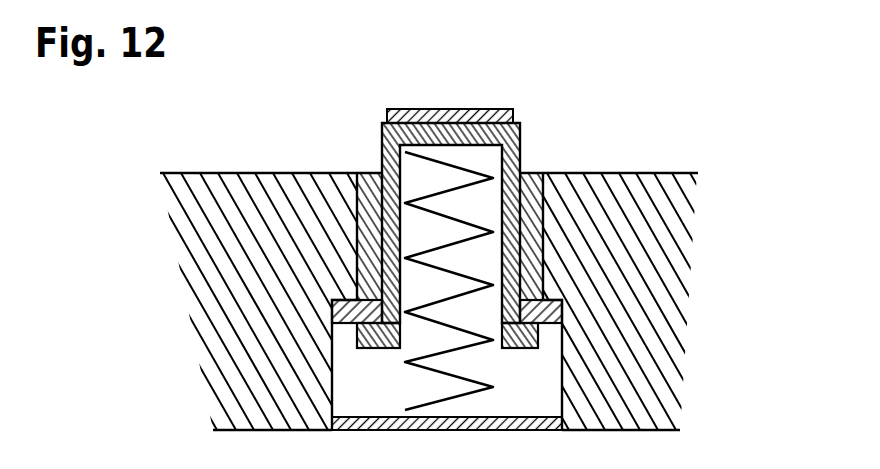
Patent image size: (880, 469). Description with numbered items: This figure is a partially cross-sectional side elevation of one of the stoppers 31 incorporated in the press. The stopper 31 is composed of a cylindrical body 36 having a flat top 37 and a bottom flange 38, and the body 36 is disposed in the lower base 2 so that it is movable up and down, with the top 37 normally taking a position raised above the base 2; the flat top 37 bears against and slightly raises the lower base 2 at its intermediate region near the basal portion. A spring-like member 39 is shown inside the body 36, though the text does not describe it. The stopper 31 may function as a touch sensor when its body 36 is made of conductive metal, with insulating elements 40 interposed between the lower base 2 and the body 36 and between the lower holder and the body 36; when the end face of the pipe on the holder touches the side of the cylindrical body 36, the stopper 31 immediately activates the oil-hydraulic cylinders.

The lower base 2 is at (213, 180).
The stopper 31 is at (378, 148).
The cylindrical body 36 is at (545, 271).
The flat top 37 is at (442, 118).
The bottom flange 38 is at (562, 322).
The spring 39 is at (418, 368).
The insulating elements 40 is at (483, 110).